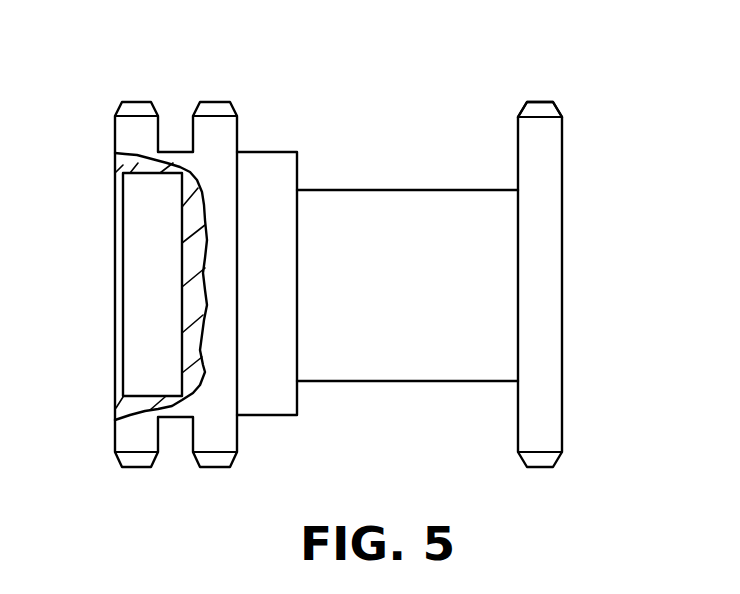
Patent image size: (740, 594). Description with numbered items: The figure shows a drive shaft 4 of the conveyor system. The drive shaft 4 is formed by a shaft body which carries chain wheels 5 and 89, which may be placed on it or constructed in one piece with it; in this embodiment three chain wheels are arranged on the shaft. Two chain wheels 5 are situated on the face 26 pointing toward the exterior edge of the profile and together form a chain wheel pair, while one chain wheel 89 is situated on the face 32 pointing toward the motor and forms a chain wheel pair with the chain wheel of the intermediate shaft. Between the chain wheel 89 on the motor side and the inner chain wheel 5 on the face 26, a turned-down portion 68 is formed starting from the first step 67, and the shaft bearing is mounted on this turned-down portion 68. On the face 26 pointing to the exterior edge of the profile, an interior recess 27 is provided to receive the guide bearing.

The chain wheel 5 is at (140, 110).
The face pointing toward the exterior edge of the profile 26 is at (125, 143).
The interior recess 27 is at (137, 378).
The first step 67 is at (262, 152).
The drive shaft 4 is at (395, 210).
The turned-down portion 68 is at (417, 382).
The face pointing toward the motor 32 is at (562, 340).
The chain wheel 89 is at (537, 110).